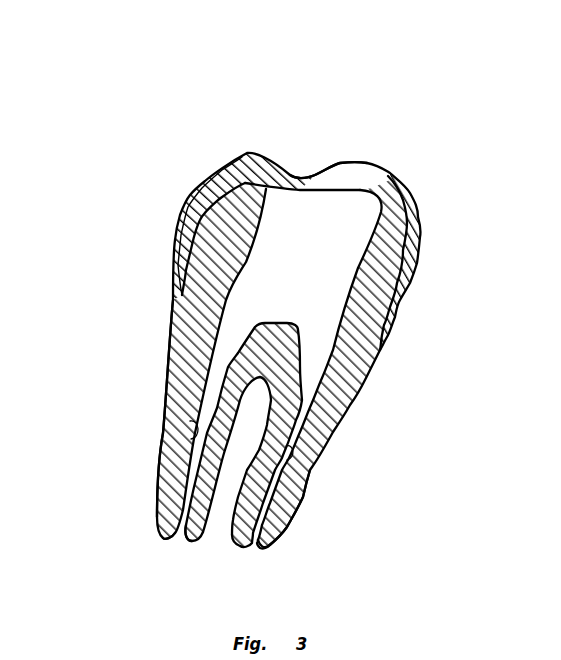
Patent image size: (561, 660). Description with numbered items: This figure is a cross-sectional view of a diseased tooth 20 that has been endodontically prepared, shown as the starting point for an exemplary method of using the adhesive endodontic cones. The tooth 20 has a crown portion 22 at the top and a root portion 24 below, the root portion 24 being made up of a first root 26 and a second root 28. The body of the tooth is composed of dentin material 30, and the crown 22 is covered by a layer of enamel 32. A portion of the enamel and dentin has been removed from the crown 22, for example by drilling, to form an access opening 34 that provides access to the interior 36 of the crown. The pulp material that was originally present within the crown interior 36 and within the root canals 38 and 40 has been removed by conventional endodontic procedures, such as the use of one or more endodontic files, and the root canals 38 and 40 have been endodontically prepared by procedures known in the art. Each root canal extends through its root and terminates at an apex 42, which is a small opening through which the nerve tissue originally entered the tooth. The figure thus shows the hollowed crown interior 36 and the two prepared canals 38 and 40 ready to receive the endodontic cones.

The tooth 20 is at (167, 123).
The crown portion 22 is at (170, 148).
The root portion 24 is at (123, 315).
The first root 26 is at (166, 499).
The second root 28 is at (277, 517).
The dentin material 30 is at (200, 325).
The enamel 32 is at (250, 153).
The access opening 34 is at (327, 182).
The interior of the crown 36 is at (337, 257).
The root canal 38 is at (190, 439).
The root canal 40 is at (311, 475).
The apex 42 is at (177, 537).